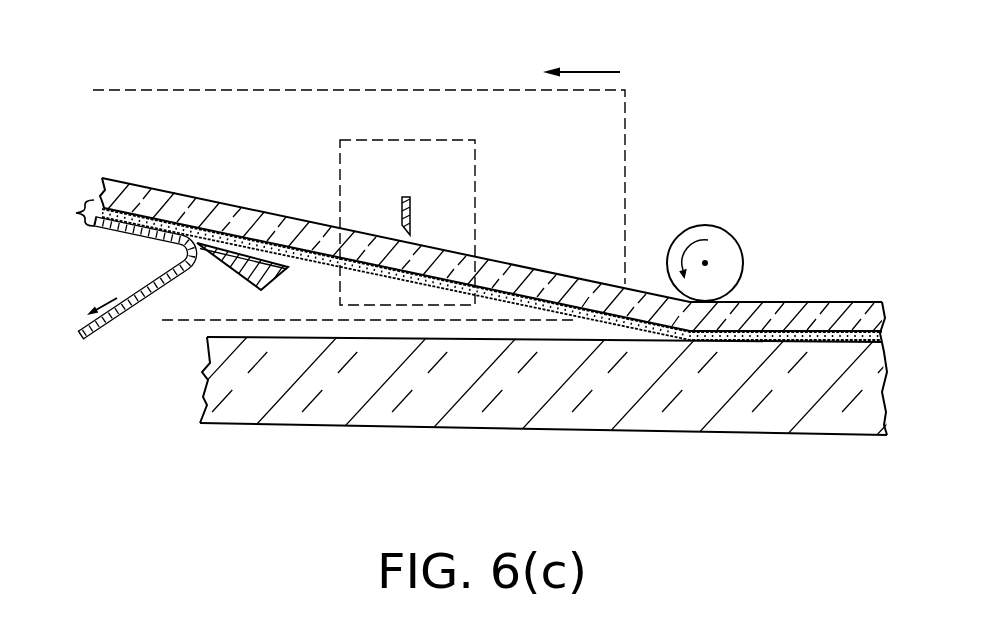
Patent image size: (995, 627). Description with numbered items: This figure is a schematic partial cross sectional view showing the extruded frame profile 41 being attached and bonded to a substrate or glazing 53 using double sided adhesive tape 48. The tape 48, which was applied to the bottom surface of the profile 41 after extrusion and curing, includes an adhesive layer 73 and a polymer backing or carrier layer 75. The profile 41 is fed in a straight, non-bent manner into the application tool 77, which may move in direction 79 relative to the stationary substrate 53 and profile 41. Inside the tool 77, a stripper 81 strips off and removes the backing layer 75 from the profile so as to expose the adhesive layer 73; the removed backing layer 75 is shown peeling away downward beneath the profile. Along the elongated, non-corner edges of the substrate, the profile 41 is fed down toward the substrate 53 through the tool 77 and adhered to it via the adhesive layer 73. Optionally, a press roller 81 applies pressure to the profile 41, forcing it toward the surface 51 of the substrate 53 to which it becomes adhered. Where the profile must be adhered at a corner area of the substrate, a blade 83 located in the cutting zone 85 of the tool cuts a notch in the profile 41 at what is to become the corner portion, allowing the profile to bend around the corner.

The profile 41 is at (85, 174).
The double sided adhesive tape 48 is at (65, 230).
The surface of the substrate 51 is at (262, 337).
The substrate 53 is at (725, 425).
The adhesive layer 73 is at (578, 318).
The polymer backing/carrier layer 75 is at (123, 318).
The application tool 77 is at (625, 167).
The direction 79 is at (580, 72).
The stripper / press roller 81 is at (245, 280).
The blade 83 is at (410, 212).
The cutting zone 85 is at (475, 160).